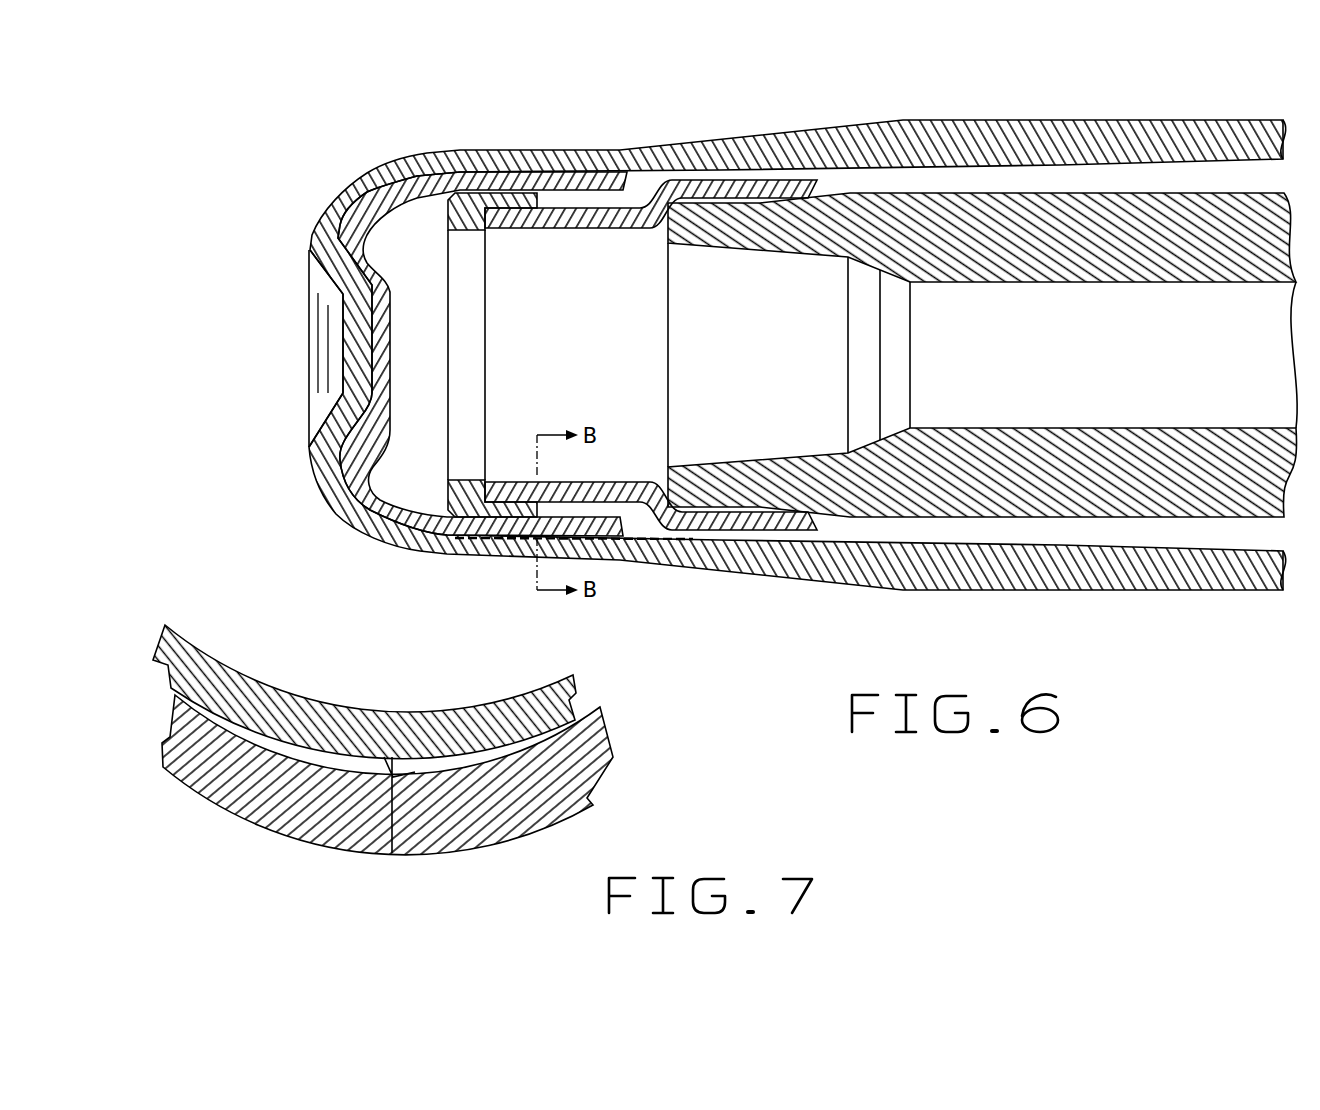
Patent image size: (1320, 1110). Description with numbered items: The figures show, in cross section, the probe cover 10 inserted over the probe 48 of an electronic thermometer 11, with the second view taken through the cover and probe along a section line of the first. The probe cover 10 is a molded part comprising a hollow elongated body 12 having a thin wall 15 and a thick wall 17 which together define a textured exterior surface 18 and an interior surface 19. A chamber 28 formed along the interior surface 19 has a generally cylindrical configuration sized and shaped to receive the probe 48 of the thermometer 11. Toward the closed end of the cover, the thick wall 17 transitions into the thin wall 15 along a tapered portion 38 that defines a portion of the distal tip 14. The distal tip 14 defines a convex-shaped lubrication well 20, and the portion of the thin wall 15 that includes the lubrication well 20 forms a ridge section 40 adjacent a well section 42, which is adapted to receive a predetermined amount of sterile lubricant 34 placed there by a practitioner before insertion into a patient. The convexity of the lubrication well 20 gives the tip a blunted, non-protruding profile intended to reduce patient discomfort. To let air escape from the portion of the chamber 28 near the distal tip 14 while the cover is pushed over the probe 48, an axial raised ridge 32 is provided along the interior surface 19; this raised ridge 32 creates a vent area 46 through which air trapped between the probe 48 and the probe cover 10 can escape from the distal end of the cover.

In FIG. 6, the probe cover 10 is at (975, 104).
In FIG. 7, the probe cover 10 is at (487, 848).
In FIG. 6, the electronic thermometer 11 is at (1230, 230).
In FIG. 6, the hollow elongated body 12 is at (957, 602).
In FIG. 6, the distal tip 14 is at (319, 184).
In FIG. 6, the thin wall 15 is at (430, 155).
In FIG. 6, the thick wall 17 is at (945, 121).
In FIG. 6, the textured exterior surface 18 is at (1062, 121).
In FIG. 6, the interior surface 19 is at (1132, 164).
In FIG. 6, the lubrication well 20 is at (340, 363).
In FIG. 6, the chamber 28 is at (1022, 528).
In FIG. 6, the axial raised ridge 32 is at (658, 530).
In FIG. 7, the axial raised ridge 32 is at (392, 850).
In FIG. 6, the sterile lubricant 34 is at (308, 413).
In FIG. 6, the tapered portion 38 is at (800, 132).
In FIG. 6, the ridge section 40 is at (360, 177).
In FIG. 6, the well section 42 is at (309, 283).
In FIG. 6, the vent area 46 is at (600, 542).
In FIG. 7, the vent area 46 is at (462, 762).
In FIG. 6, the probe 48 is at (785, 500).